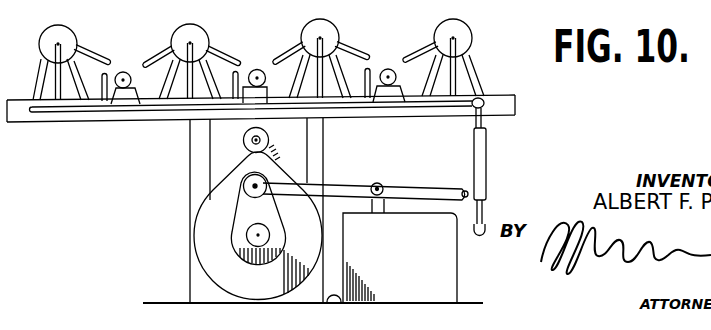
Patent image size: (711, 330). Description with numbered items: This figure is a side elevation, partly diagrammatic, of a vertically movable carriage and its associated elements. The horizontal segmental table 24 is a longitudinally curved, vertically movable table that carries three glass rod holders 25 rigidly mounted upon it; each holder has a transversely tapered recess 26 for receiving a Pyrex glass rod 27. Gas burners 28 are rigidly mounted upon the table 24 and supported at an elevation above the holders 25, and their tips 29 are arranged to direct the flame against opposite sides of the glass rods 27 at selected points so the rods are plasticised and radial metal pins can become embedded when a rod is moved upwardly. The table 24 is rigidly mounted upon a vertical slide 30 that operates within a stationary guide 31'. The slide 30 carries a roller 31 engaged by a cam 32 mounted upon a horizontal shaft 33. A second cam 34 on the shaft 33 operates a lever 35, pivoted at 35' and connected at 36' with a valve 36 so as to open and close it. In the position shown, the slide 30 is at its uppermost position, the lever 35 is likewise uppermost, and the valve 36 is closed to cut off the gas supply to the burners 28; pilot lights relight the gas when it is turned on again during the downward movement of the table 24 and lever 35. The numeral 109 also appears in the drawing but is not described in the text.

The supporting bar 24 is at (517, 101).
The hook 25 is at (141, 90).
The bracket 26 is at (116, 89).
The ball 27 is at (125, 72).
The rotary wheel 28 is at (63, 36).
The arm 29 is at (90, 56).
The post 30 is at (213, 133).
The pulley 31 is at (305, 154).
The post 31' is at (241, 210).
The disc 32 is at (212, 227).
The pivot 33 is at (252, 238).
The cam 34 is at (238, 215).
The arm 35 is at (354, 179).
The pivot rod 35' is at (499, 172).
The box 36 is at (400, 257).
The pivot 36' is at (388, 183).
The reference 109 is at (279, 4).